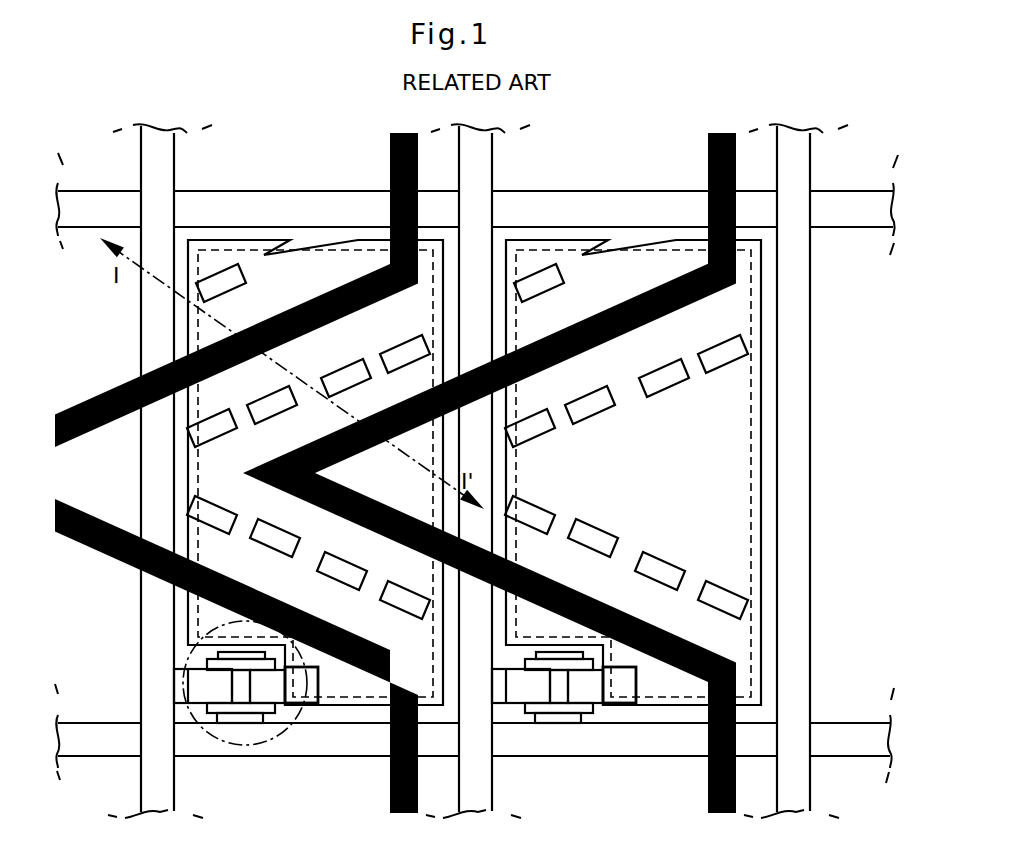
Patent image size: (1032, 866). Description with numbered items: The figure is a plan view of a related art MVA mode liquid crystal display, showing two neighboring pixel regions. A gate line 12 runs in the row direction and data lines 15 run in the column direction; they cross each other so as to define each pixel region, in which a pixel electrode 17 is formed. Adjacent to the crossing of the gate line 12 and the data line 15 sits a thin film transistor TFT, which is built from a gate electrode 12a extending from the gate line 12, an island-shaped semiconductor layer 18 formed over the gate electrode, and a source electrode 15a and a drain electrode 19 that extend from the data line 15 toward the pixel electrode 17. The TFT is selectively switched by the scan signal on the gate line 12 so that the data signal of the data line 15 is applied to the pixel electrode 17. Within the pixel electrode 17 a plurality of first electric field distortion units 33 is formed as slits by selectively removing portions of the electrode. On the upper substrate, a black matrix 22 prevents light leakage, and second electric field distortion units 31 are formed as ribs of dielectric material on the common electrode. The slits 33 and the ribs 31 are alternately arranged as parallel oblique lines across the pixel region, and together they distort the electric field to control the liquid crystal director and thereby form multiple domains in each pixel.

The gate line 12 is at (858, 735).
The gate electrode 12a is at (237, 652).
The data line 15 is at (150, 630).
The source electrode 15a is at (203, 694).
The pixel electrode 17 is at (353, 698).
The semiconductor layer 18 is at (243, 704).
The drain electrode 19 is at (305, 699).
The black matrix 22 is at (360, 248).
The second electric field distortion unit 31 is at (157, 372).
The first electric field distortion unit 33 is at (212, 440).
The thin film transistor TFT is at (270, 745).